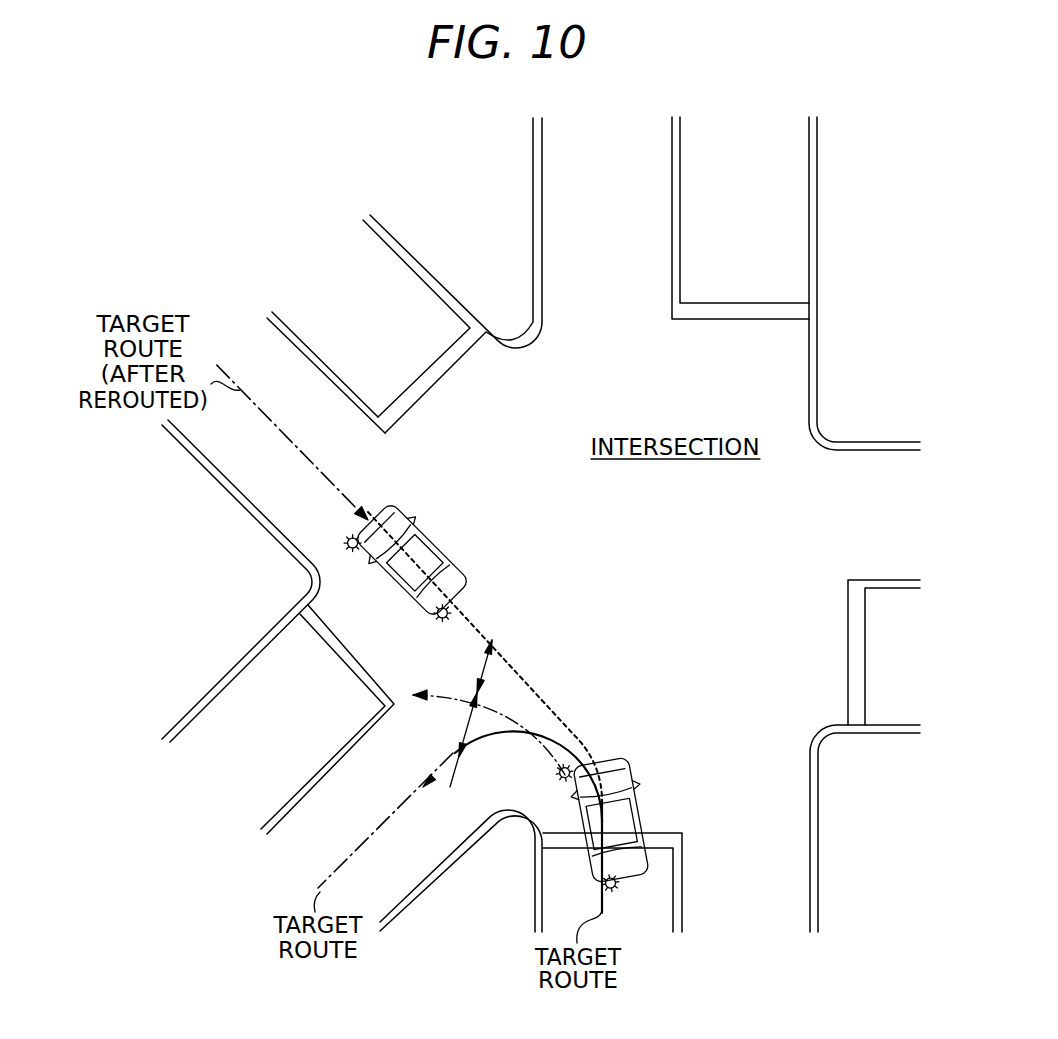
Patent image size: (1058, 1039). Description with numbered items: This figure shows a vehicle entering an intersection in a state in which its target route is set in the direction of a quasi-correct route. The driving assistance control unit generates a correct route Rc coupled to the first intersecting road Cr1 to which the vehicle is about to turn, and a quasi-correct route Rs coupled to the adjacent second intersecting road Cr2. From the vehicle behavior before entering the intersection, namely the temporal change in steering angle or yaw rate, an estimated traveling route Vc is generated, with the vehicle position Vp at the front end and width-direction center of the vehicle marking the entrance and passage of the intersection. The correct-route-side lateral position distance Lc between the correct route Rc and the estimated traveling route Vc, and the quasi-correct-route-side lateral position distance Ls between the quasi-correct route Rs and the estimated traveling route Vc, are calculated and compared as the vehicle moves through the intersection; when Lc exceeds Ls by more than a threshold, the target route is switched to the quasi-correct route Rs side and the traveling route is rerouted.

The first intersecting road Cr1 is at (397, 893).
The second intersecting road Cr2 is at (275, 503).
The quasi-correct route Rs is at (513, 650).
The correct route Rc is at (538, 737).
The quasi-correct-route-side lateral position distance Ls is at (485, 652).
The correct-route-side lateral position distance Lc is at (455, 766).
The vehicle position Vp is at (476, 692).
The estimated traveling route Vc is at (452, 697).